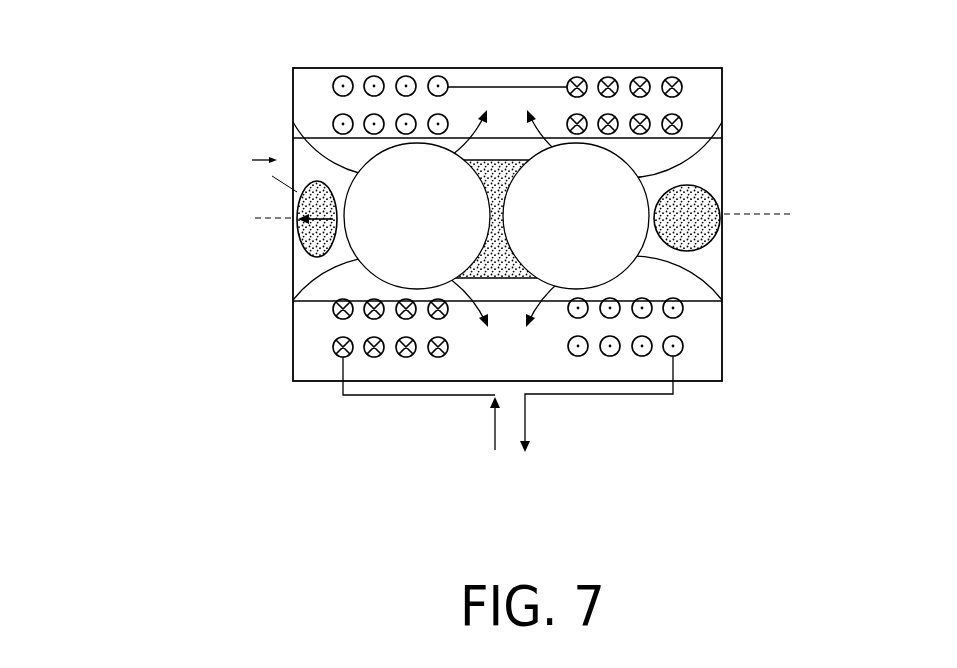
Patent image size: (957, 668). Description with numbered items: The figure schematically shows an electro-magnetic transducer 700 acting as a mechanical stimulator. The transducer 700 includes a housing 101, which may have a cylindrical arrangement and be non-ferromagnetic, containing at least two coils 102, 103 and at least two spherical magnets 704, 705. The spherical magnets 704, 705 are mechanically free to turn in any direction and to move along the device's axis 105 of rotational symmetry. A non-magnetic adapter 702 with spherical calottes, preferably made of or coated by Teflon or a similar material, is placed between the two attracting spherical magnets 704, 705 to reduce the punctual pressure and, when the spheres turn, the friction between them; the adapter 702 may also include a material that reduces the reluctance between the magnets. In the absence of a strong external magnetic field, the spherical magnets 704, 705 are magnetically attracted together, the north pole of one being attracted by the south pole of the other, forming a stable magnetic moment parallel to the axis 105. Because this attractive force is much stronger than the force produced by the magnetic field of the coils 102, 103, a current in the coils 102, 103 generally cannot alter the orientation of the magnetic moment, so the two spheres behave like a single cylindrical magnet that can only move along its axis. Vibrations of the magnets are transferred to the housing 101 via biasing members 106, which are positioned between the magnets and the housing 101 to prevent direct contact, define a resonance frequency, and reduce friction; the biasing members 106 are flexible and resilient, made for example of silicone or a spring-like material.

The transducer 700 is at (121, 403).
The housing 101 is at (322, 74).
The coil 102 is at (333, 124).
The coil 103 is at (679, 80).
The axis of rotational symmetry 105 is at (776, 214).
The biasing member 106 is at (300, 243).
The non-magnetic adapter 702 is at (500, 280).
The spherical magnet 704 is at (432, 190).
The spherical magnet 705 is at (567, 188).